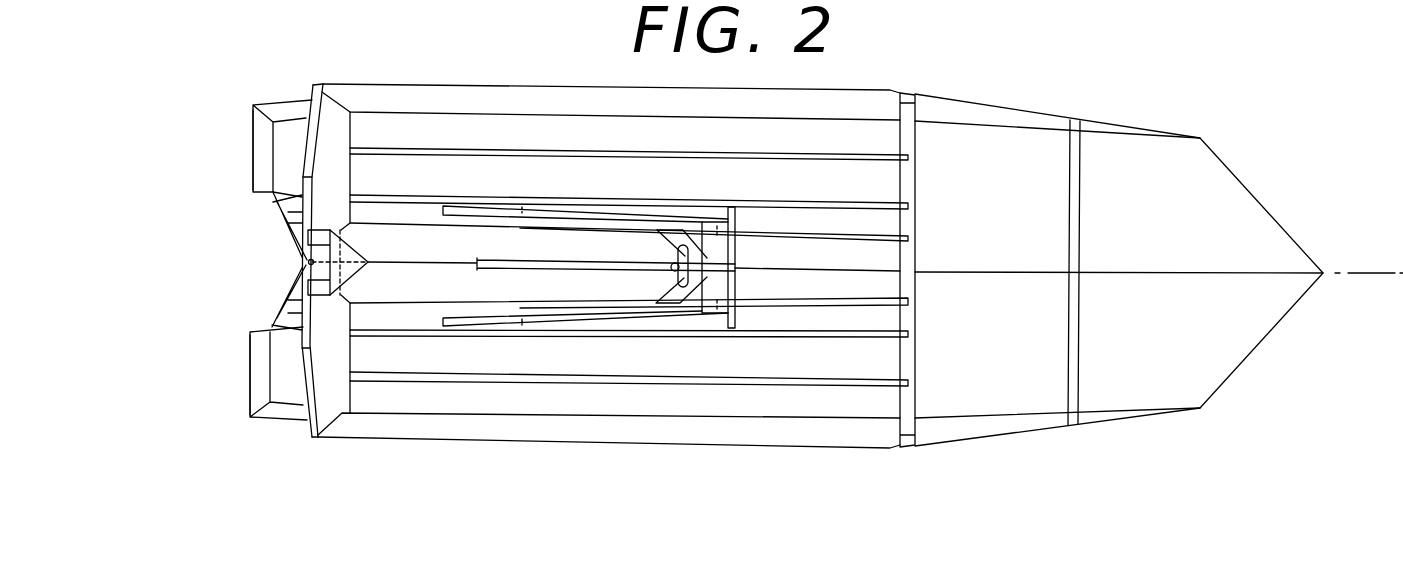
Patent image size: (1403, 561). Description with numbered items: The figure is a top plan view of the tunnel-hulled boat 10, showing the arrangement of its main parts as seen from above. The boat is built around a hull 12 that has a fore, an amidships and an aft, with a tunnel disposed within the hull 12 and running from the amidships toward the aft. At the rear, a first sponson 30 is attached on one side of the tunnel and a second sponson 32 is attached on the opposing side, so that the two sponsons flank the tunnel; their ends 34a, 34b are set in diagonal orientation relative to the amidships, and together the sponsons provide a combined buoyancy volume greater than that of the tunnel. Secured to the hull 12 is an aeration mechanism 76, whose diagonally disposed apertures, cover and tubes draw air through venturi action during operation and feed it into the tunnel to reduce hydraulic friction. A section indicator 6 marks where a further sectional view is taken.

The tunnel-hulled boat 10 is at (492, 480).
The hull 12 is at (657, 360).
The first sponson 30 is at (288, 392).
The second sponson 32 is at (287, 130).
The sponson end 34a is at (262, 382).
The sponson end 34b is at (263, 150).
The aeration mechanism 76 is at (700, 276).
The section line for FIG. 6 is at (1370, 278).